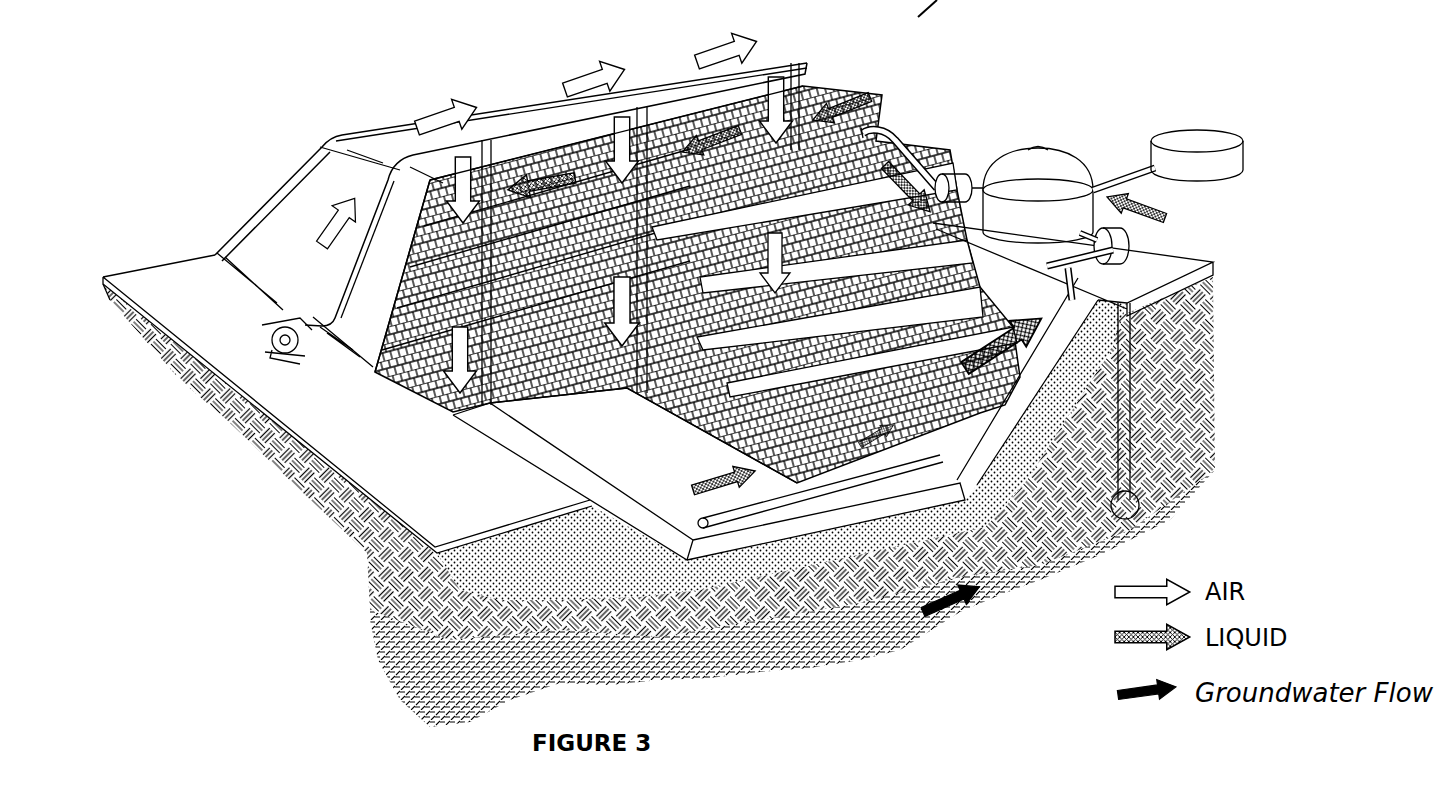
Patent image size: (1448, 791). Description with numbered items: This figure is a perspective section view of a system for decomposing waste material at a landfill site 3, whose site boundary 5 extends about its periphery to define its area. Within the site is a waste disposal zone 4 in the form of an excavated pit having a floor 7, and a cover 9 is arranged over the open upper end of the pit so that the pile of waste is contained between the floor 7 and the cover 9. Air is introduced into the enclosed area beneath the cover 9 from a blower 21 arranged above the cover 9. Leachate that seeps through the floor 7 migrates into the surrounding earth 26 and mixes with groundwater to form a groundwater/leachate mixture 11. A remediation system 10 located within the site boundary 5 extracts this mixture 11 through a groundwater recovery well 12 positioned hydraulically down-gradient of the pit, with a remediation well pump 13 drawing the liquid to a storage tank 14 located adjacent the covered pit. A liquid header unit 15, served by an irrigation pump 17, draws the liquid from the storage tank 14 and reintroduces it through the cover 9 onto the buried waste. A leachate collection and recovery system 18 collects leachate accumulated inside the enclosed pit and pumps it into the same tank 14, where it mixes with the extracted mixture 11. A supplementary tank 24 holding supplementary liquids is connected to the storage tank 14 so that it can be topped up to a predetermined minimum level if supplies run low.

The landfill site 3 is at (165, 273).
The waste disposal zone 4 is at (853, 127).
The site boundary 5 is at (110, 280).
The floor 7 is at (612, 448).
The cover 9 is at (525, 108).
The remediation system 10 is at (818, 37).
The groundwater/leachate mixture 11 is at (1203, 480).
The groundwater recovery well 12 is at (1137, 395).
The remediation well pump 13 is at (1133, 512).
The storage tank 14 is at (1067, 153).
The liquid header unit 15 is at (843, 160).
The irrigation pump 17 is at (960, 173).
The leachate collection/recovery system 18 is at (1103, 137).
The blower 21 is at (267, 323).
The supplementary tank 24 is at (1243, 160).
The surrounding earth/environment 26 is at (1203, 313).